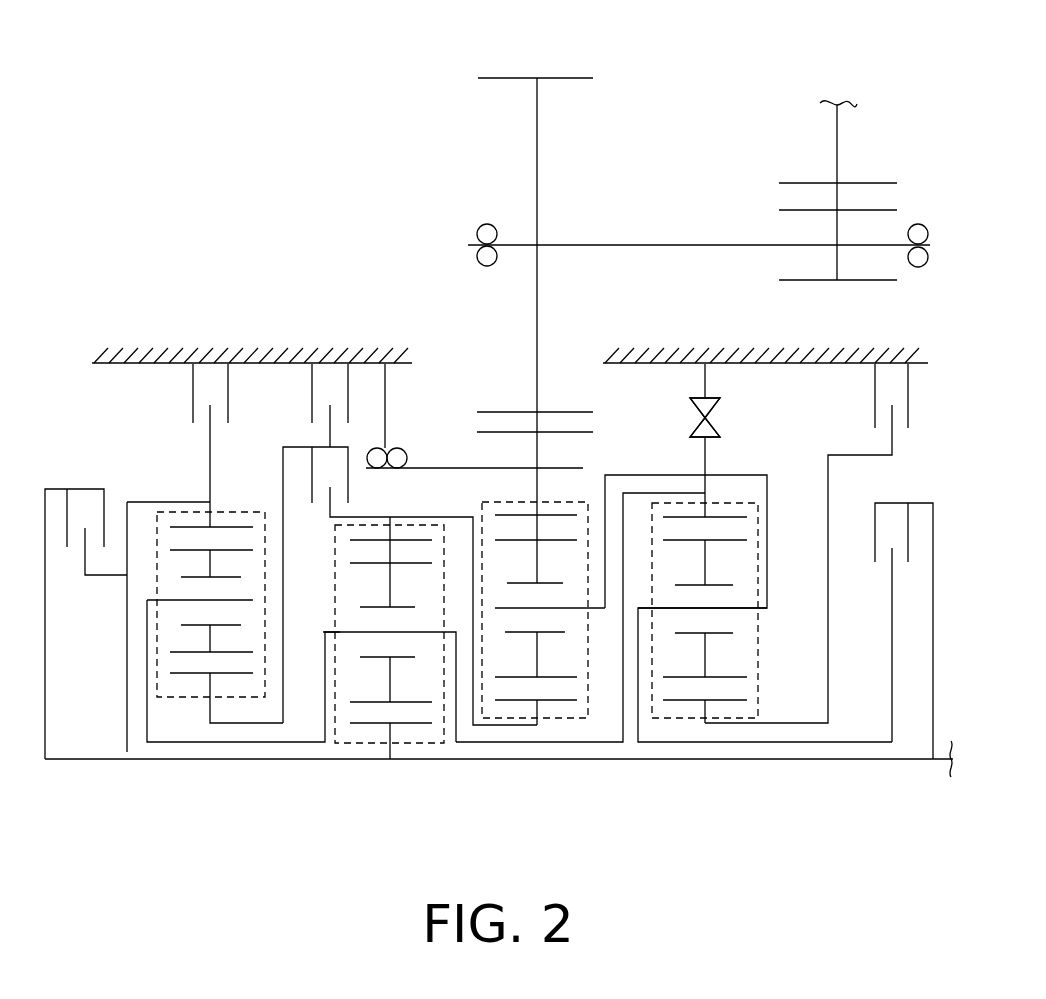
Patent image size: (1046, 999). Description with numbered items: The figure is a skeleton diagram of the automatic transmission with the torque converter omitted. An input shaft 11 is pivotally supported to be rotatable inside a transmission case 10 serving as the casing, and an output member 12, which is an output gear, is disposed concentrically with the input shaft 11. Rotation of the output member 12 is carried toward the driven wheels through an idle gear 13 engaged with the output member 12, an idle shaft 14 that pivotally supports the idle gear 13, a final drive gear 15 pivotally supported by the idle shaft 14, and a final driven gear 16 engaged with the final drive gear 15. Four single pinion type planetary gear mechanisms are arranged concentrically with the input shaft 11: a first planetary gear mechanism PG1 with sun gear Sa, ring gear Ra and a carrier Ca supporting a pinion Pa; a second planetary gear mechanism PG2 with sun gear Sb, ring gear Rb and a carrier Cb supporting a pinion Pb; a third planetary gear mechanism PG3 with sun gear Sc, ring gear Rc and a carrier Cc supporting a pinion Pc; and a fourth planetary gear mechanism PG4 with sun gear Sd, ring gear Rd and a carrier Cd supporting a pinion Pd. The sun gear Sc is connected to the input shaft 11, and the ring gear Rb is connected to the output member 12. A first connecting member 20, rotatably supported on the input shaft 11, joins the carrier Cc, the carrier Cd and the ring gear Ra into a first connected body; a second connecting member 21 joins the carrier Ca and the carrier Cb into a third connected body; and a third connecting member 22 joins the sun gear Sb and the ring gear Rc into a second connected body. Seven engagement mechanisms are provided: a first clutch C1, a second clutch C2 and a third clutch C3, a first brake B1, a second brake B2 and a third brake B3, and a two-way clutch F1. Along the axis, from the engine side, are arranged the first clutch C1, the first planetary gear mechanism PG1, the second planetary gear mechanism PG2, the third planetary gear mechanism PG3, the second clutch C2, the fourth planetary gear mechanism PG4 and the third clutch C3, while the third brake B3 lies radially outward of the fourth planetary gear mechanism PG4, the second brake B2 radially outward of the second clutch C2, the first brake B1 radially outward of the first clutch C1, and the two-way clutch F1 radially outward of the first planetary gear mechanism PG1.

The transmission case 10 is at (172, 363).
The input shaft 11 is at (945, 768).
The output member 12 is at (593, 432).
The idle gear 13 is at (510, 78).
The idle shaft 14 is at (667, 243).
The final drive gear 15 is at (792, 210).
The final driven gear 16 is at (870, 185).
The first connecting member 20 is at (607, 747).
The second connecting member 21 is at (648, 475).
The third connecting member 22 is at (447, 466).
The first brake B1 is at (806, 543).
The second brake B2 is at (330, 405).
The third brake B3 is at (210, 445).
The first clutch C1 is at (904, 631).
The second clutch C2 is at (410, 586).
The third clutch C3 is at (86, 624).
The two-way clutch F1 is at (723, 418).
The first planetary gear mechanism PG1 is at (721, 631).
The second planetary gear mechanism PG2 is at (540, 649).
The third planetary gear mechanism PG3 is at (378, 669).
The fourth planetary gear mechanism PG4 is at (209, 596).
The ring gear Ra is at (717, 514).
The ring gear Rb is at (555, 514).
The ring gear Rc is at (360, 542).
The ring gear Rd is at (234, 527).
The carrier Ca is at (752, 608).
The carrier Cb is at (560, 608).
The carrier Cc is at (429, 631).
The carrier Cd is at (190, 600).
The pinion Pa is at (735, 677).
The pinion Pb is at (560, 676).
The pinion Pc is at (400, 700).
The pinion Pd is at (188, 655).
The sun gear Sa is at (725, 705).
The sun gear Sb is at (556, 706).
The sun gear Sc is at (412, 726).
The sun gear Sd is at (187, 679).